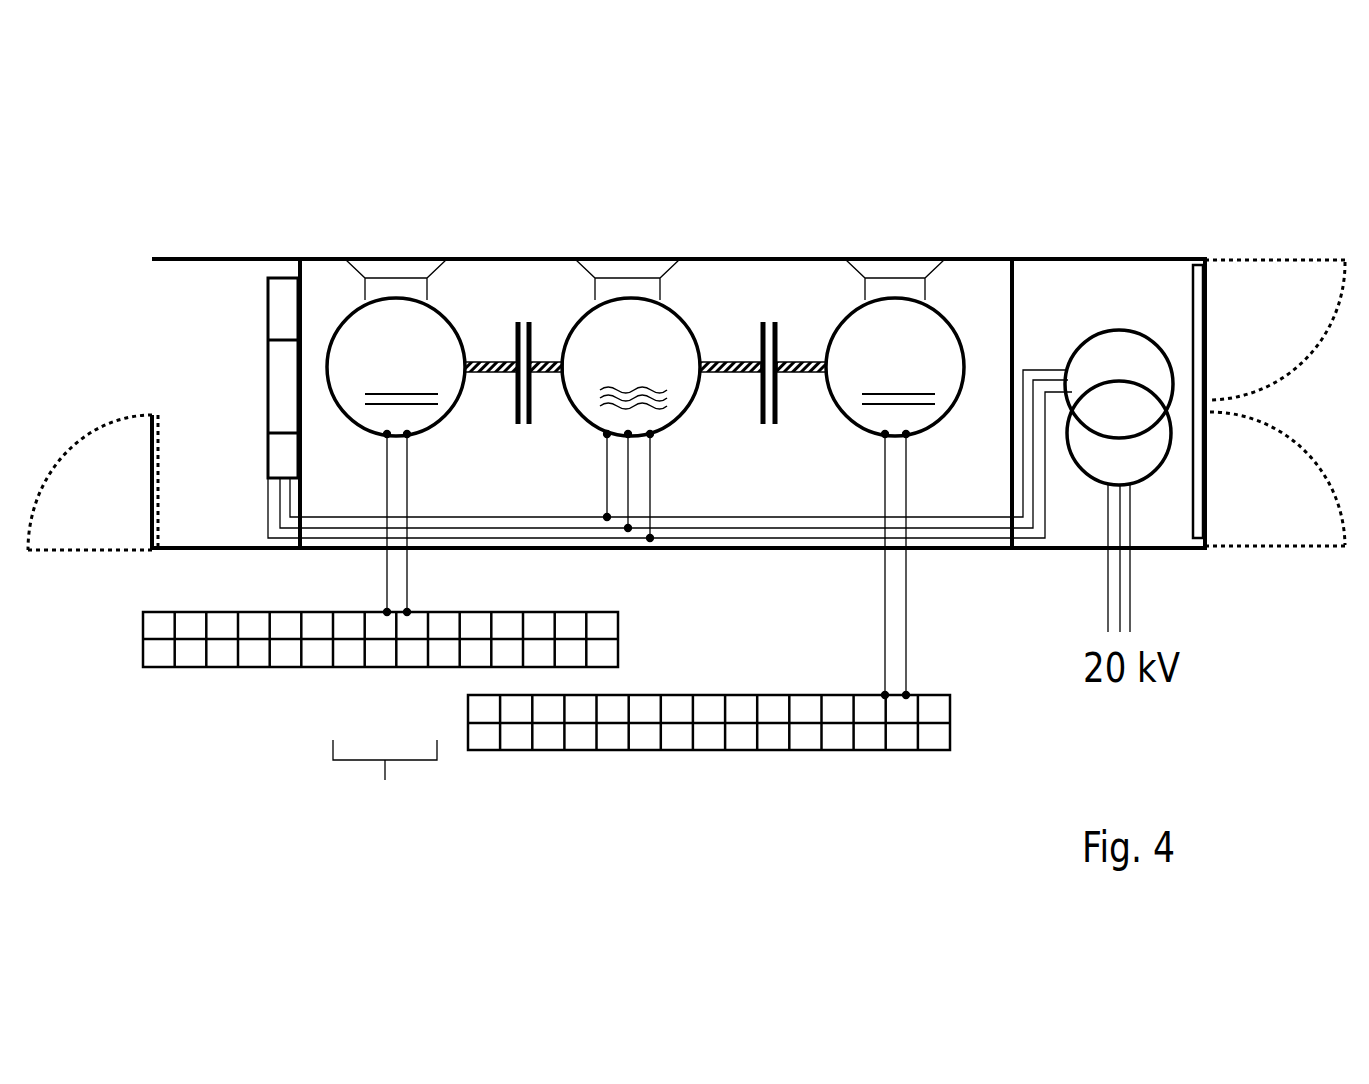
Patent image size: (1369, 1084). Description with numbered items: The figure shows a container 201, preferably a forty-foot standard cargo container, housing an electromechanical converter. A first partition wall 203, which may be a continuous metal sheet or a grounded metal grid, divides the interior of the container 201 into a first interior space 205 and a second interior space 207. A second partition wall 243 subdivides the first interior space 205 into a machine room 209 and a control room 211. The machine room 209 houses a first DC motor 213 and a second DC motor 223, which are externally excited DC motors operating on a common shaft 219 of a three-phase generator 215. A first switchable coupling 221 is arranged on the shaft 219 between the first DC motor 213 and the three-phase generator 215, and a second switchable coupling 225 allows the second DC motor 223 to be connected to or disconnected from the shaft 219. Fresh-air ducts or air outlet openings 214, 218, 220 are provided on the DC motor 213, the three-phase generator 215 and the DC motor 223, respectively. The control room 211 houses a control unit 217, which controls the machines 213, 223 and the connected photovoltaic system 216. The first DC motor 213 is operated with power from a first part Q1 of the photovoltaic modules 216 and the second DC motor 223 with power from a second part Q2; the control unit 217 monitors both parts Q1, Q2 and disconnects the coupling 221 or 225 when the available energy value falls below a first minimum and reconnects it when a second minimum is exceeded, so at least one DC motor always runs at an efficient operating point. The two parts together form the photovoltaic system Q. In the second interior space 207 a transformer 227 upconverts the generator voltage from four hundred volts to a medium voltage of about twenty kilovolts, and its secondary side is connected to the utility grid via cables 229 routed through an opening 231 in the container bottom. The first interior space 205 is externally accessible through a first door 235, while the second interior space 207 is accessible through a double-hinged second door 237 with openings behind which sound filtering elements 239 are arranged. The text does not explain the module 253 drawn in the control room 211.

The container 201 is at (495, 257).
The first partition wall 203 is at (1008, 322).
The first interior space 205 is at (227, 508).
The second interior space 207 is at (1087, 265).
The machine room 209 is at (733, 268).
The control room 211 is at (181, 281).
The first DC motor 213 is at (447, 420).
The fresh-air duct 214 is at (395, 268).
The three-phase generator 215 is at (675, 422).
The photovoltaic modules 216 is at (618, 638).
The control unit 217 is at (267, 455).
The fresh-air duct 218 is at (628, 268).
The common shaft 219 is at (542, 373).
The fresh-air duct 220 is at (893, 258).
The first switchable coupling 221 is at (510, 340).
The second DC motor 223 is at (930, 437).
The second switchable coupling 225 is at (777, 323).
The transformer 227 is at (1080, 342).
The cables 229 is at (1132, 523).
The opening 231 is at (1100, 550).
The first door 235 is at (100, 427).
The second door 237 is at (1282, 537).
The sound filtering elements 239 is at (1202, 255).
The second partition wall 243 is at (298, 258).
The control unit 253 is at (268, 310).
The first part of the photovoltaic system Q1 is at (292, 667).
The second part of the photovoltaic system Q2 is at (467, 710).
The total charge Q is at (385, 783).